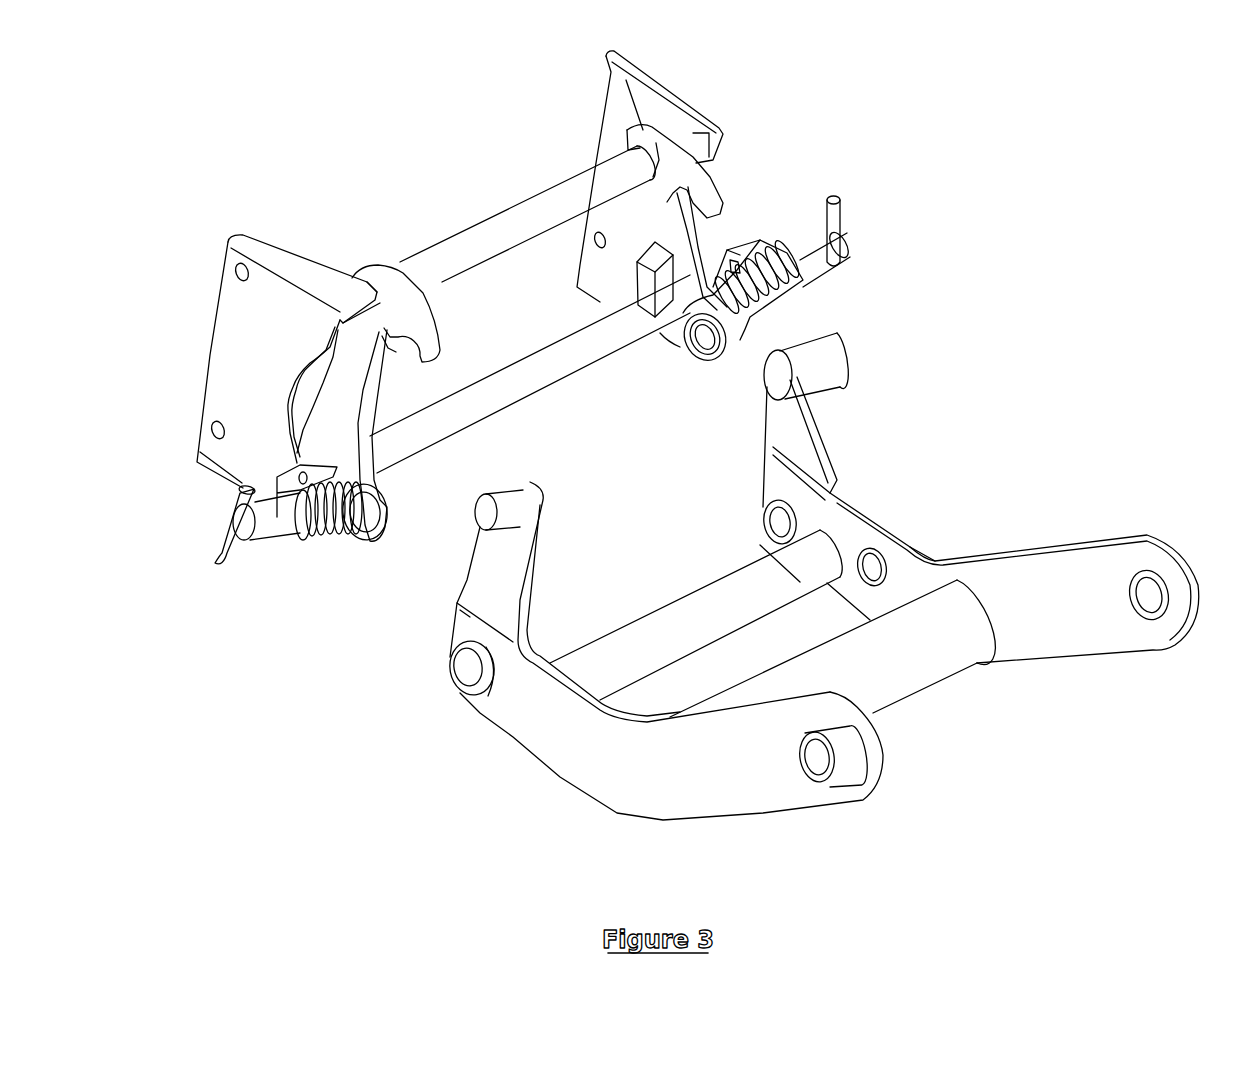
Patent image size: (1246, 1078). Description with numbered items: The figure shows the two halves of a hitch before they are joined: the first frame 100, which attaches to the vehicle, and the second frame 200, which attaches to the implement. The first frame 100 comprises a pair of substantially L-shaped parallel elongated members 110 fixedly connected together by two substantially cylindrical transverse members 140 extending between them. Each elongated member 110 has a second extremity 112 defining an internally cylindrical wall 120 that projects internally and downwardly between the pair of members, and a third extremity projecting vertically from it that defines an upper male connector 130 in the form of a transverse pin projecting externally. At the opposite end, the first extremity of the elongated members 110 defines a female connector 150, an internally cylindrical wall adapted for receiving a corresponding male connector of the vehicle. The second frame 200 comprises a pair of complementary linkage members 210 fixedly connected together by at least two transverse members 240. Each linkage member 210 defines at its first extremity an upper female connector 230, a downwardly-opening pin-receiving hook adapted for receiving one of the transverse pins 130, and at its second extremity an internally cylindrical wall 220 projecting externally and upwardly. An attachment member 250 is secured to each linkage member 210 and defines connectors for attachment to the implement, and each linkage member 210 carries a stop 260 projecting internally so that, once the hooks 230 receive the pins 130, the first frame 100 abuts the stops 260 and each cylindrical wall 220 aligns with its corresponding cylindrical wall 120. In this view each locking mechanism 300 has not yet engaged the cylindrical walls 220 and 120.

The first frame 100 is at (920, 446).
The elongated members 110 is at (618, 776).
The second extremity 112 is at (530, 710).
The cylindrical wall 120 is at (450, 670).
The upper male connector 130 is at (380, 471).
The transverse members 140 is at (683, 641).
The female connector 150 is at (800, 770).
The second frame 200 is at (340, 91).
The linkage members 210 is at (351, 429).
The cylindrical wall 220 is at (687, 347).
The upper female connector 230 is at (437, 330).
The transverse members 240 is at (523, 236).
The attachment member 250 is at (220, 317).
The stop 260 is at (640, 273).
The locking mechanism 300 is at (843, 215).